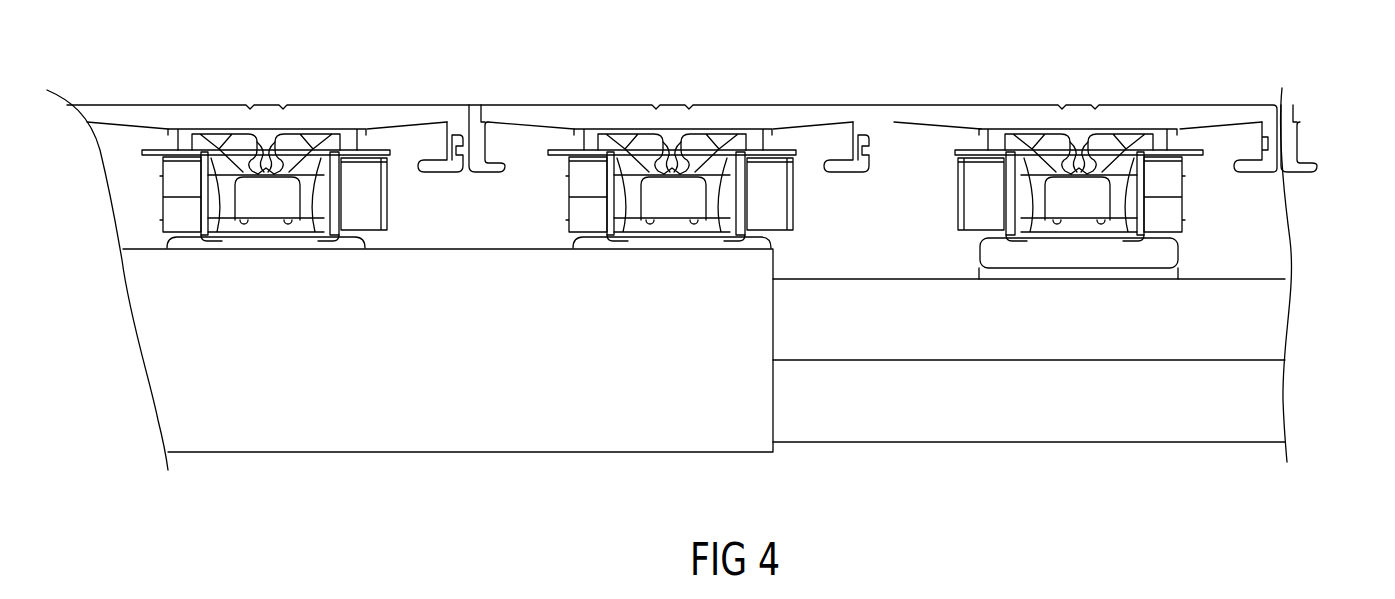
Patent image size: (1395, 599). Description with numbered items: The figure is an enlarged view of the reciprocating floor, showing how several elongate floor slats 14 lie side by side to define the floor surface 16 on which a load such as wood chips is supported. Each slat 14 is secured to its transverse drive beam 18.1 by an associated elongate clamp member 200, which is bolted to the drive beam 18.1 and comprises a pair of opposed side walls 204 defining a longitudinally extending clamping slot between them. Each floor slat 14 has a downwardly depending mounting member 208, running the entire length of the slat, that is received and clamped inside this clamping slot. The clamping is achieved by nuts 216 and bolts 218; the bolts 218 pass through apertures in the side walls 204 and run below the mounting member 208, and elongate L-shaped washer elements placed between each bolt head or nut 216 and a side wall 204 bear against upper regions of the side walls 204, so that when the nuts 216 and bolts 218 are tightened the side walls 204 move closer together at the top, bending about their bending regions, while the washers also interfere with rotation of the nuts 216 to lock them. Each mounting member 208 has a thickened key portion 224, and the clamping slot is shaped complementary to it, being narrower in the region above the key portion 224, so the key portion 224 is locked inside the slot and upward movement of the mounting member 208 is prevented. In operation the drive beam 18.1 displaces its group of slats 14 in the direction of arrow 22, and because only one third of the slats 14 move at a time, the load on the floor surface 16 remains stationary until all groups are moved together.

The floor slat 14 is at (725, 112).
The floor surface 16 is at (387, 100).
The arrow 22 is at (352, 152).
The clamp member 200 is at (1170, 247).
The side wall 204 is at (627, 198).
The mounting member 208 is at (668, 150).
The nut 216 is at (577, 172).
The bolt 218 is at (757, 172).
The key portion 224 is at (682, 163).
The transverse drive beam 18.1 is at (1253, 322).